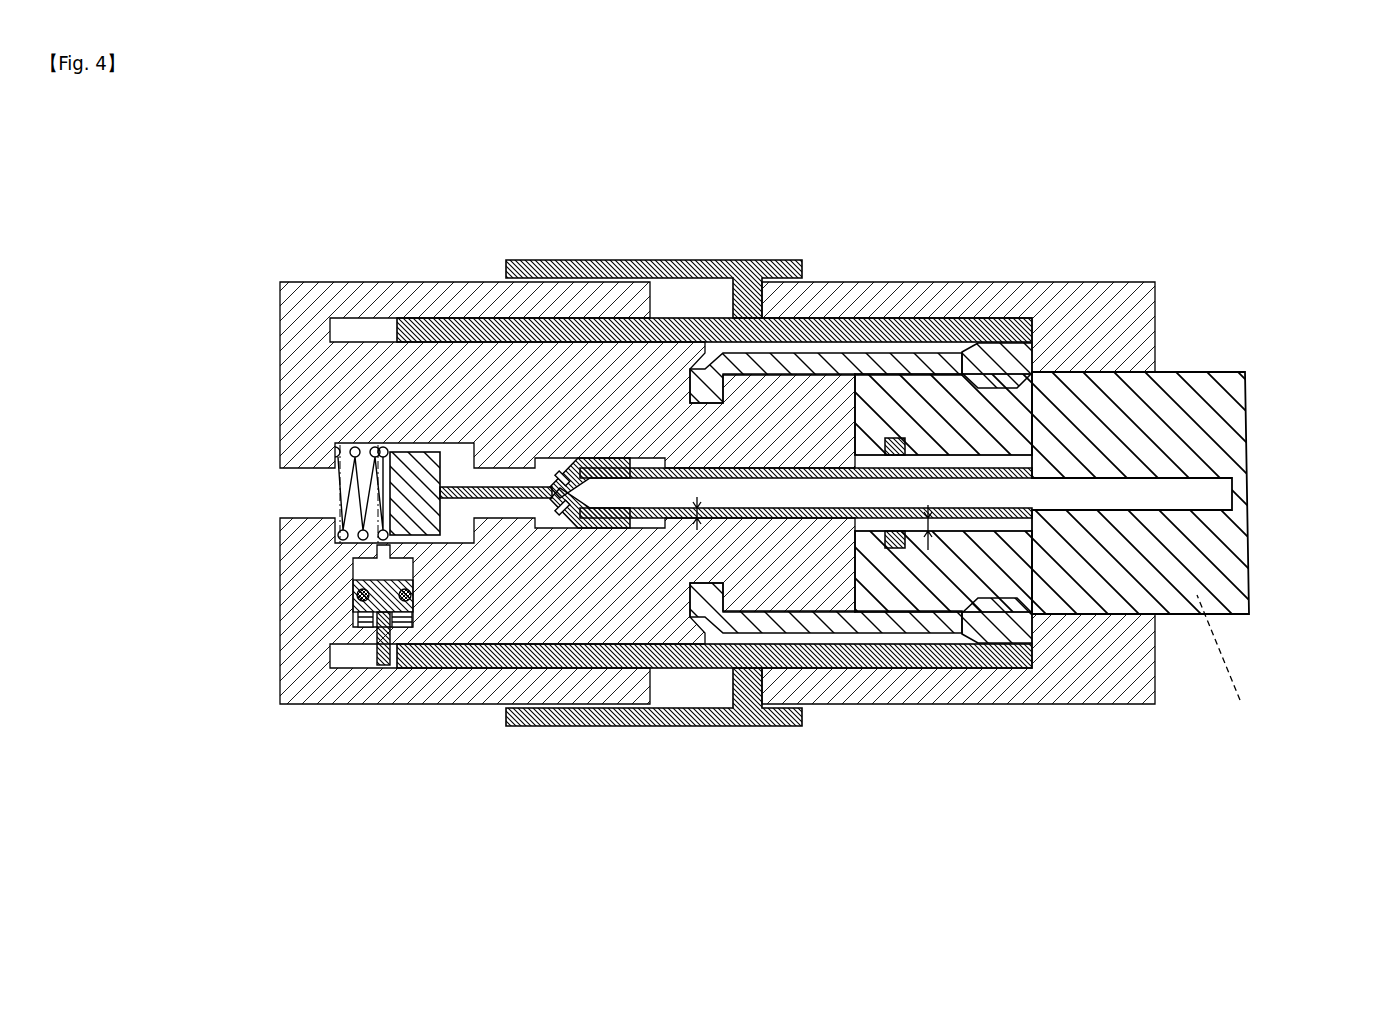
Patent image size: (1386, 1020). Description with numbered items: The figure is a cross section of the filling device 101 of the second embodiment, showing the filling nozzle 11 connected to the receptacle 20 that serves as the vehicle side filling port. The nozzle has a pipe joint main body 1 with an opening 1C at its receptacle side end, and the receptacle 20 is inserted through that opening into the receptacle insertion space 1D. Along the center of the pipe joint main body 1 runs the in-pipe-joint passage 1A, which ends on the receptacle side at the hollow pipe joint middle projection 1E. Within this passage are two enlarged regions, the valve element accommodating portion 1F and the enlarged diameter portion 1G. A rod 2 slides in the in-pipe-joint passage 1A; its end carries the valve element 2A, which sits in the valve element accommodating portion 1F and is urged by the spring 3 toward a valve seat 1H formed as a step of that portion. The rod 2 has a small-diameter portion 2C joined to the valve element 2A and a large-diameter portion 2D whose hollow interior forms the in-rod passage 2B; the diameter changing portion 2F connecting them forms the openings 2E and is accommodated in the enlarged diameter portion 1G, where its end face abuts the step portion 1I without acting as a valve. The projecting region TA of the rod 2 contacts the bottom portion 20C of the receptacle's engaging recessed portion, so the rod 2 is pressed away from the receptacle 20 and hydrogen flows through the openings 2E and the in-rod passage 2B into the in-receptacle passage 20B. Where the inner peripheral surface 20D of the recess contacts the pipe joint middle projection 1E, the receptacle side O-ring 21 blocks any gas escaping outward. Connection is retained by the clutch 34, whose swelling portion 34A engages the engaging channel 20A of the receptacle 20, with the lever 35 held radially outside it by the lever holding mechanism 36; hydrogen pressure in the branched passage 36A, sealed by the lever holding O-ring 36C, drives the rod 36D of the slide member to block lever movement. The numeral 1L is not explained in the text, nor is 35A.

The filling device 101 is at (1196, 219).
The filling nozzle 11 is at (311, 243).
The pipe joint main body 1 is at (278, 341).
The in-pipe-joint passage 1A is at (524, 476).
The opening 1C is at (1170, 372).
The receptacle insertion space 1D is at (1226, 659).
The pipe joint middle projection 1E is at (907, 450).
The valve element accommodating portion 1F is at (455, 665).
The enlarged diameter portion 1G is at (613, 457).
The valve seat 1H is at (477, 462).
The step portion 1I is at (643, 530).
The housing groove 1L is at (427, 668).
The rod 2 is at (762, 517).
The valve element 2A is at (417, 460).
The in-rod passage 2B is at (810, 490).
The small-diameter portion 2C is at (485, 500).
The large-diameter portion 2D is at (758, 467).
The openings 2E is at (605, 463).
The diameter changing portion 2F is at (648, 462).
The spring 3 is at (352, 452).
The receptacle 20 is at (1222, 368).
The engaging channel 20A is at (1033, 422).
The in-receptacle passage 20B is at (1217, 510).
The bottom portion of the engaging recessed portion 20C is at (1012, 535).
The inner peripheral surface of the engaging recessed portion 20D is at (950, 525).
The receptacle side O-ring 21 is at (878, 562).
The clutch 34 is at (930, 353).
The swelling portion 34A is at (1006, 375).
The lever 35 is at (863, 340).
The plate cap 35A is at (778, 258).
The lever holding mechanism 36 is at (346, 612).
The branched passage 36A is at (383, 550).
The lever holding O-ring 36C is at (357, 596).
The rod of the lever holding slide member 36D is at (377, 658).
The projecting region TA is at (1157, 497).